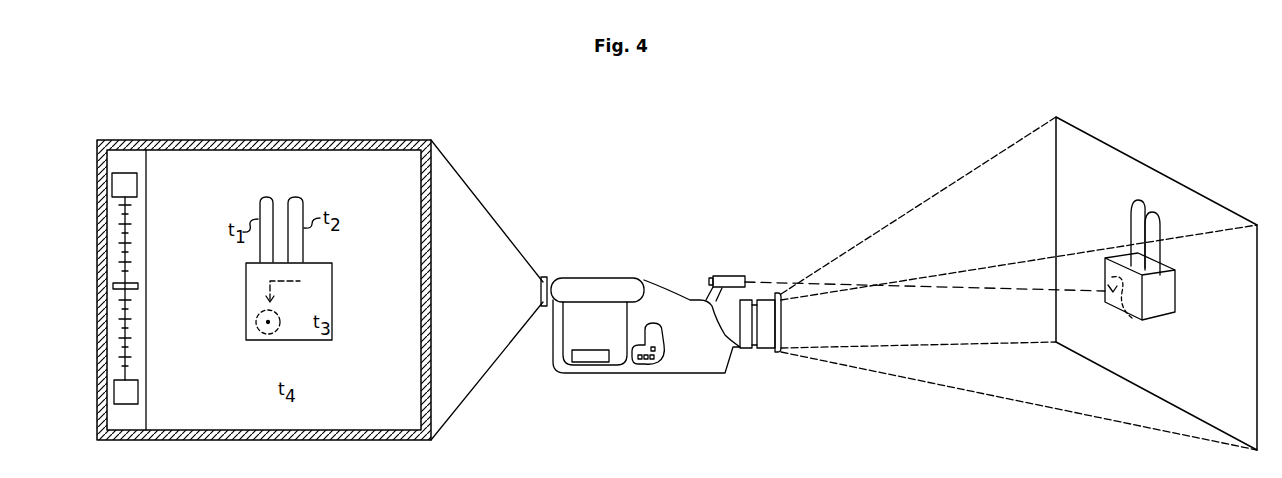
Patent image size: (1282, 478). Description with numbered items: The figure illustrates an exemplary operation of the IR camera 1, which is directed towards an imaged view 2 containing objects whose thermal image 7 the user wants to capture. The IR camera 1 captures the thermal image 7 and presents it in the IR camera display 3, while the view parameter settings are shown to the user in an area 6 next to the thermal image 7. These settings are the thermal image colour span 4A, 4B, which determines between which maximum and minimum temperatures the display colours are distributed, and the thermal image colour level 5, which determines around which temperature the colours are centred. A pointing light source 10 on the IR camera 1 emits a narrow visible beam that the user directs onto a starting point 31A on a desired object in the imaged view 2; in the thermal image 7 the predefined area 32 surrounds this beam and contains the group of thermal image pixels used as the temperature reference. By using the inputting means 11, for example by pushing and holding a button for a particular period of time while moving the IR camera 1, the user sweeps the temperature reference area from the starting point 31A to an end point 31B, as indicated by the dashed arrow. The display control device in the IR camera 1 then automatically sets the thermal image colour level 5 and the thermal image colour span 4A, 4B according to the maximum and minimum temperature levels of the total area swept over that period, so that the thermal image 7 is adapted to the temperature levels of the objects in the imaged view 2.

The IR camera 1 is at (604, 277).
The imaged view 2 is at (1085, 132).
The IR camera display 3 is at (357, 140).
The thermal image colour span 4A is at (112, 185).
The thermal image colour span 4B is at (114, 392).
The thermal image colour level 5 is at (113, 286).
The area 6 is at (124, 165).
The thermal image 7 is at (158, 290).
The pointing light source 10 is at (735, 276).
The inputting means 11 is at (655, 365).
The starting point 31A is at (300, 281).
The end point 31B is at (266, 321).
The predefined area 32 is at (272, 334).